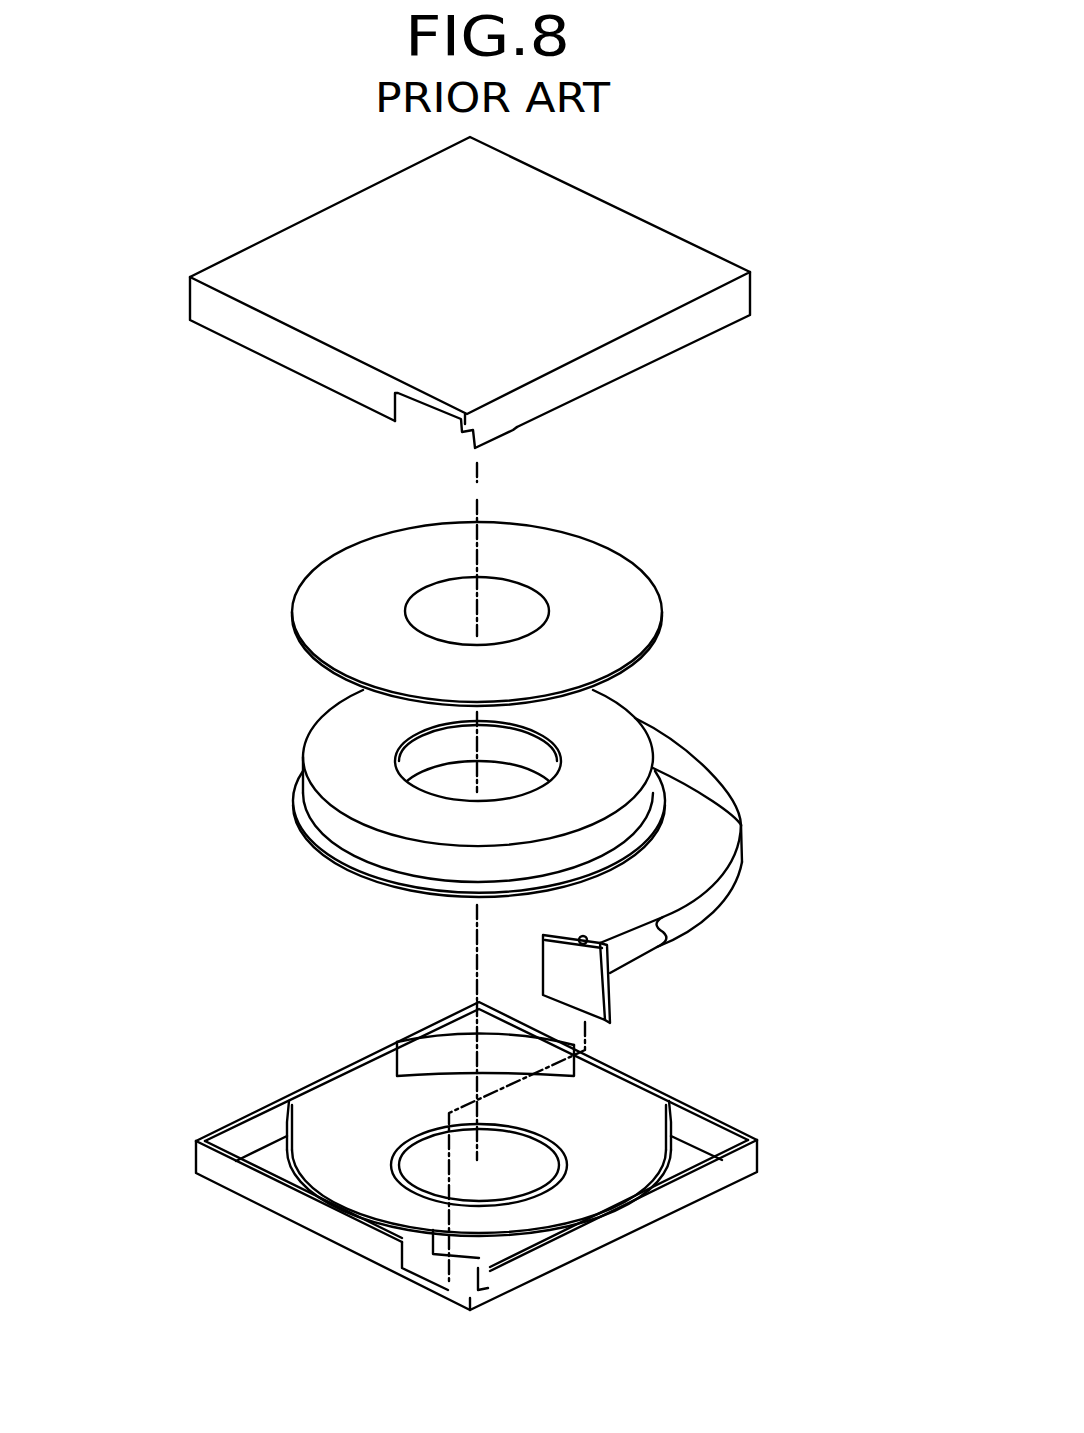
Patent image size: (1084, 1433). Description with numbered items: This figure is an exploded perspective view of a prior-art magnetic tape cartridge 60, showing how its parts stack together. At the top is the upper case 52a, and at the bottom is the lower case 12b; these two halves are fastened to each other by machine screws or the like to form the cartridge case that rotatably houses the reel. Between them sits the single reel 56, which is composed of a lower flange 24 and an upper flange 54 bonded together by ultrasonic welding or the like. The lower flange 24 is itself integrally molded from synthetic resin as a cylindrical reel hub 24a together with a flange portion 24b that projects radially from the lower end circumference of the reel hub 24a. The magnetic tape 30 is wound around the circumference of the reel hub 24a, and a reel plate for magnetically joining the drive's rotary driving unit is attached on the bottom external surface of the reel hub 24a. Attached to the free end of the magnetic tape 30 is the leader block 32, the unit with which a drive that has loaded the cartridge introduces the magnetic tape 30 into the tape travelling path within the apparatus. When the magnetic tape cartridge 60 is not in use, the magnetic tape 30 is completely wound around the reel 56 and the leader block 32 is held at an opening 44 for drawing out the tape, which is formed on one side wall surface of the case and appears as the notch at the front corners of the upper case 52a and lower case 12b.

The magnetic tape cartridge 60 is at (668, 212).
The upper case 52a is at (598, 370).
The opening 44 is at (425, 418).
The upper flange 54 is at (625, 582).
The reel 56 is at (730, 517).
The lower flange 24 is at (217, 708).
The reel hub 24a is at (417, 757).
The flange portion 24b is at (327, 860).
The magnetic tape 30 is at (735, 863).
The leader block 32 is at (597, 992).
The lower case 12b is at (611, 1228).